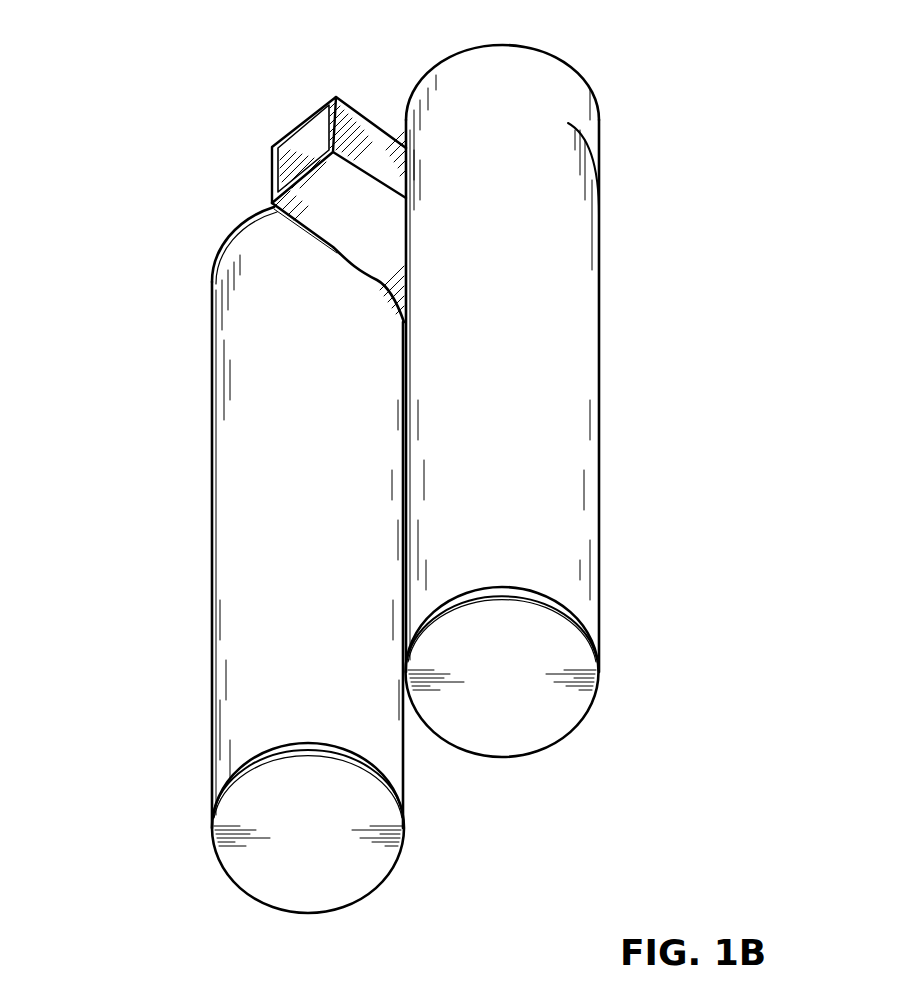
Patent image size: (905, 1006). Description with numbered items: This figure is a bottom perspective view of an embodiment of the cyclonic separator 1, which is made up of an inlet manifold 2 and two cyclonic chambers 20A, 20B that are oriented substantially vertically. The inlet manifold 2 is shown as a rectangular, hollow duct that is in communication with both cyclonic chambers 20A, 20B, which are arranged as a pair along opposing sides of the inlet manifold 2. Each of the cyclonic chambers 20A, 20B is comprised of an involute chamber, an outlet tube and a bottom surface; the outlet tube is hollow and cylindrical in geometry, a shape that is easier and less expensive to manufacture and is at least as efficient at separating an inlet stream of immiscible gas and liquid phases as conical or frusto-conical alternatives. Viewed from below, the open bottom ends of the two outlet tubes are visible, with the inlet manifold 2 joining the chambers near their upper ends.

The cyclonic separator 1 is at (670, 82).
The inlet manifold 2 is at (384, 75).
The first cyclonic chamber 20A is at (172, 655).
The second cyclonic chamber 20B is at (655, 464).